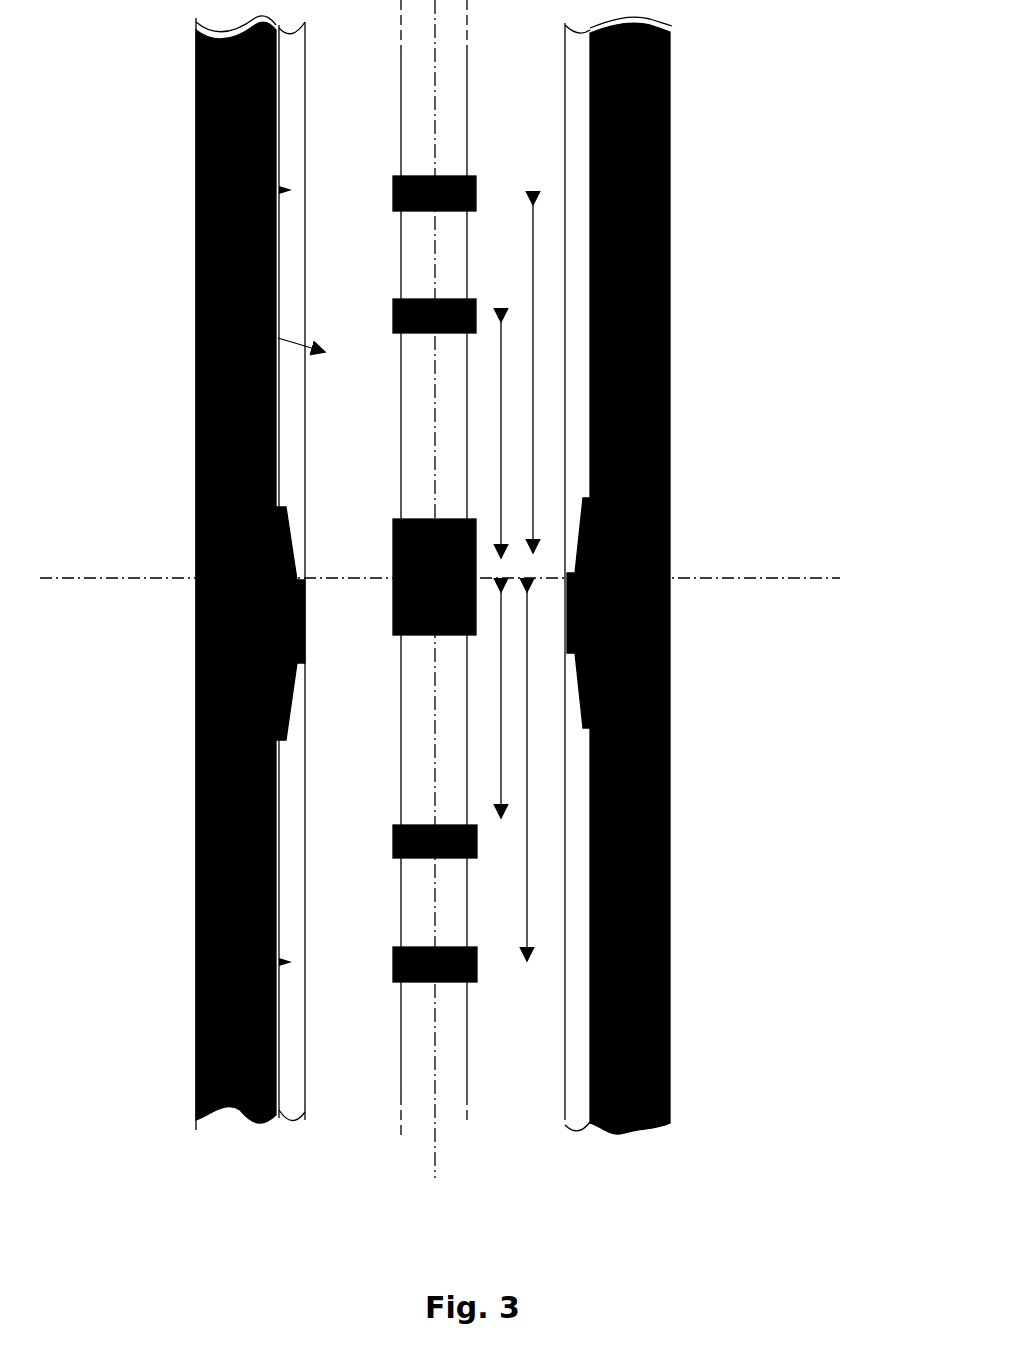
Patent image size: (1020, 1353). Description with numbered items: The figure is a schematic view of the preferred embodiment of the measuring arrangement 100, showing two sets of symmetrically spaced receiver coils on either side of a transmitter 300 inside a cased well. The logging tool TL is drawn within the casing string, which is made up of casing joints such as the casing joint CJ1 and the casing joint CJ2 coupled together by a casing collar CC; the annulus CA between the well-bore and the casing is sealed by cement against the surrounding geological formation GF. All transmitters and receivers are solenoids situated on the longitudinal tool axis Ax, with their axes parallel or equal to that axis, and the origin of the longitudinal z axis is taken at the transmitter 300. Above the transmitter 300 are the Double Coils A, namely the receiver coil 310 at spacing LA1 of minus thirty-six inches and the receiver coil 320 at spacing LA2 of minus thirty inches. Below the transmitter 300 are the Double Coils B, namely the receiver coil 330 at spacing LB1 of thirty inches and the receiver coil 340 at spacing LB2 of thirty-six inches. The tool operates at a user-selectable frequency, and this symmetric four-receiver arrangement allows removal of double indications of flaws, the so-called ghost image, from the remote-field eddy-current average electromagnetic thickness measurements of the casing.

The measuring arrangement 100 is at (613, 570).
The transmitter 300 is at (476, 540).
The receiver coil of Double Coils A 310 is at (476, 197).
The receiver coil of Double Coils A 320 is at (476, 318).
The receiver coil of Double Coils B 330 is at (477, 840).
The receiver coil of Double Coils B 340 is at (393, 948).
The annulus CA is at (196, 92).
The geological formation GF is at (186, 146).
The casing joint CJ1 is at (196, 194).
The casing joint CJ2 is at (196, 962).
The logging tool TL is at (196, 318).
The casing collar CC is at (196, 470).
The tool axis Ax is at (435, 1162).
The receiver spacing LA1 is at (477, 440).
The receiver spacing LA2 is at (554, 379).
The receiver spacing LB1 is at (477, 705).
The receiver spacing LB2 is at (551, 776).